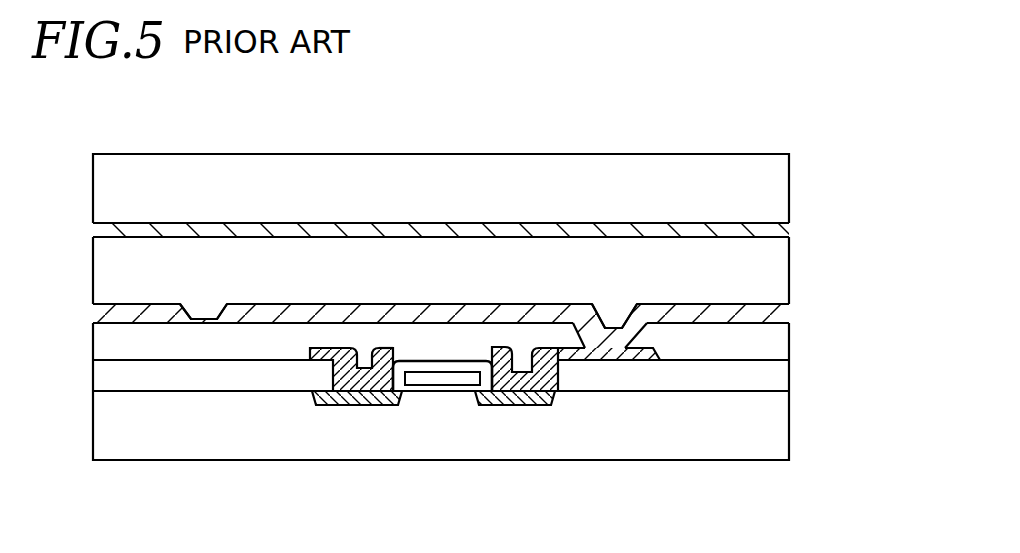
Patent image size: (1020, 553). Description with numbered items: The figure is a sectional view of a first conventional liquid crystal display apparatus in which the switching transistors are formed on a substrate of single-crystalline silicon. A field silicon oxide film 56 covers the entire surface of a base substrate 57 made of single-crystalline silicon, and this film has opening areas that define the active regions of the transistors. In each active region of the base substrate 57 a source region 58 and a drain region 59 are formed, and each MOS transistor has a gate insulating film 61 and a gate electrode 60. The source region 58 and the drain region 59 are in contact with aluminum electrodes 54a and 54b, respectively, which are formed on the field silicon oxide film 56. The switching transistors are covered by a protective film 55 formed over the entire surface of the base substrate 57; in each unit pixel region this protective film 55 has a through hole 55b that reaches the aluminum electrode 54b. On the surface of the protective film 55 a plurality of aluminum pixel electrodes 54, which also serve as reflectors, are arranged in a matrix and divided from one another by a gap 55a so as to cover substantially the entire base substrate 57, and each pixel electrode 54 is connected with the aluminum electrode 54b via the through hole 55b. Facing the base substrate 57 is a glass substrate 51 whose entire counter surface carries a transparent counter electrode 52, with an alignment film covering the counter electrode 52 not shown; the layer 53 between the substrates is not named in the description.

The glass substrate 51 is at (775, 173).
The transparent counter electrode 52 is at (778, 237).
The liquid crystal layer 53 is at (777, 267).
The pixel electrode 54 is at (729, 325).
The aluminum electrode 54a is at (392, 349).
The aluminum electrode 54b is at (640, 362).
The protective film 55 is at (777, 340).
The gap 55a is at (210, 317).
The through hole 55b is at (615, 306).
The field silicon oxide film 56 is at (775, 375).
The base substrate 57 is at (780, 420).
The source region 58 is at (383, 407).
The drain region 59 is at (525, 407).
The gate electrode 60 is at (445, 380).
The gate insulating film 61 is at (460, 388).